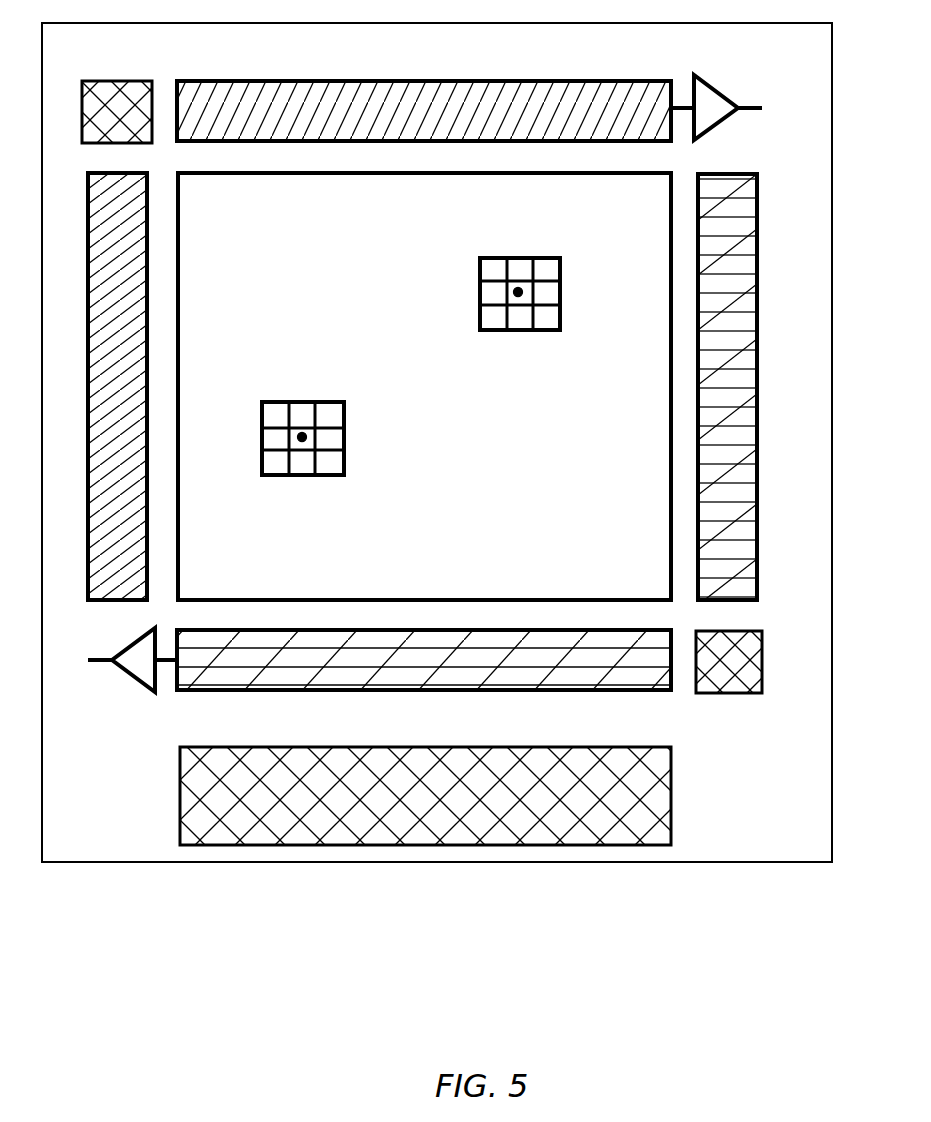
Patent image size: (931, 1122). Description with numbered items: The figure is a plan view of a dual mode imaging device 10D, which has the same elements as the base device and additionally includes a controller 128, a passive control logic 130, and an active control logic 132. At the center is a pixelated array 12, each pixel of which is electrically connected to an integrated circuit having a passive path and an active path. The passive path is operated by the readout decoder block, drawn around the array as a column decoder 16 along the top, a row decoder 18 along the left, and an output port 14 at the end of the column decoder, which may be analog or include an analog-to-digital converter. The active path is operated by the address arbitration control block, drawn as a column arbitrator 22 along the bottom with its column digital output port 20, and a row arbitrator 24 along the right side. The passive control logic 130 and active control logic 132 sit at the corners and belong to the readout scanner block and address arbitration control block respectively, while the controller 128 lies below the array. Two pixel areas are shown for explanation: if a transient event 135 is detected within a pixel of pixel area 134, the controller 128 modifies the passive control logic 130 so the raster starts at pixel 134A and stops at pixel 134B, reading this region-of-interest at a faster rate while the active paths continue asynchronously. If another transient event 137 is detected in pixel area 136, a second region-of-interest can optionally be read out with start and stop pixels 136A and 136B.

The device 10D is at (640, 924).
The pixelated array 12 is at (166, 208).
The output port 14 is at (717, 92).
The column decoder 16 is at (500, 79).
The row decoder 18 is at (88, 420).
The column digital output port 20 is at (140, 682).
The column arbitrator 22 is at (203, 690).
The row arbitrator 24 is at (758, 408).
The controller 128 is at (670, 787).
The passive control logic 130 is at (80, 98).
The active control logic 132 is at (763, 673).
The pixel area 134 is at (509, 285).
The pixel 134A is at (478, 257).
The pixel 134B is at (558, 328).
The transient event 135 is at (518, 290).
The pixel area 136 is at (334, 425).
The pixel 136A is at (262, 405).
The pixel 136B is at (343, 475).
The transient event 137 is at (302, 434).